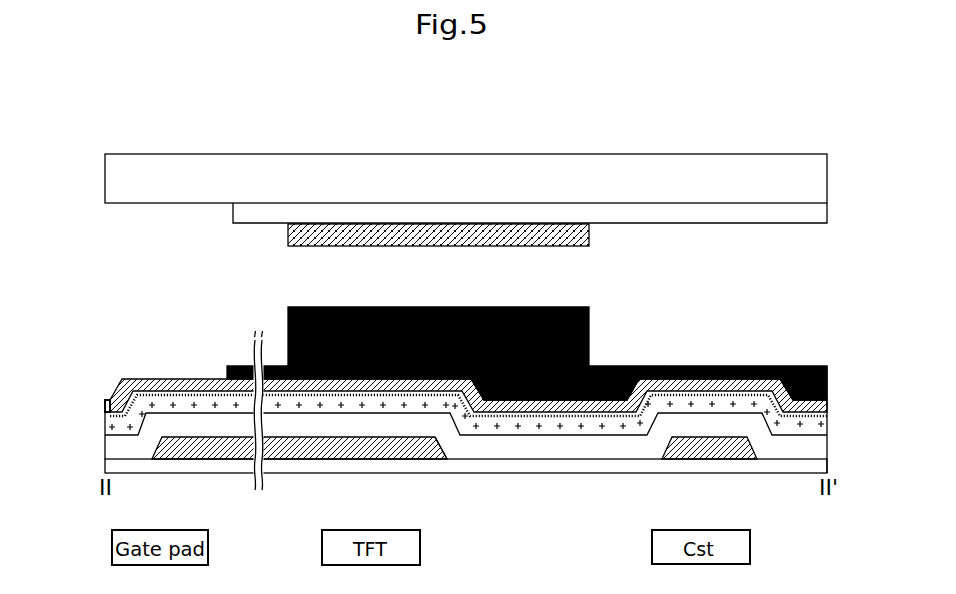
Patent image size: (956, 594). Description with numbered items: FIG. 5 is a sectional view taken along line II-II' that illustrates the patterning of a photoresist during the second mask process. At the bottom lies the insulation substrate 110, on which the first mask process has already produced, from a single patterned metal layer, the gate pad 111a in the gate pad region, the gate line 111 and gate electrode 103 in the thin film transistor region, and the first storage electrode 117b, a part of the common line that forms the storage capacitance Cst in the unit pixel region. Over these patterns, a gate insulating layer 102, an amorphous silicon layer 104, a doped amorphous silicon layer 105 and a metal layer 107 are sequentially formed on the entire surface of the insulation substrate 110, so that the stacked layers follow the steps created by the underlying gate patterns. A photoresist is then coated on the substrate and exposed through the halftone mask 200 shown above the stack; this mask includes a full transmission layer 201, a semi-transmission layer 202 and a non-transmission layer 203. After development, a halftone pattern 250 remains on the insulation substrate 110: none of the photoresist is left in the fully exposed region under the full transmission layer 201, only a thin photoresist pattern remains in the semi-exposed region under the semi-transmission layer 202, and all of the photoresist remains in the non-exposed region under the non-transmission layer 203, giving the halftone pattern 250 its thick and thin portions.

The halftone mask 200 is at (344, 141).
The full transmission layer 201 is at (148, 182).
The semi-transmission layer 202 is at (275, 210).
The non-transmission layer 203 is at (589, 237).
The halftone pattern 250 is at (590, 326).
The metal layer 107 is at (161, 379).
The amorphous silicon layer 104 is at (207, 408).
The doped amorphous silicon layer 105 is at (107, 406).
The gate insulating layer 102 is at (557, 445).
The gate electrode 103 is at (426, 452).
The gate pad 111a is at (198, 449).
The gate line 111 is at (295, 452).
The first storage electrode 117b is at (713, 451).
The insulation substrate 110 is at (787, 464).